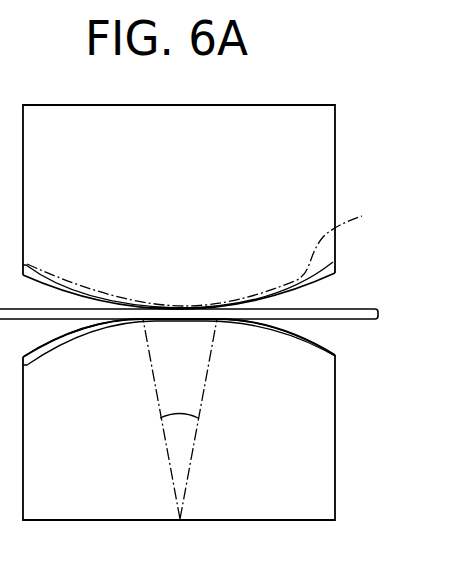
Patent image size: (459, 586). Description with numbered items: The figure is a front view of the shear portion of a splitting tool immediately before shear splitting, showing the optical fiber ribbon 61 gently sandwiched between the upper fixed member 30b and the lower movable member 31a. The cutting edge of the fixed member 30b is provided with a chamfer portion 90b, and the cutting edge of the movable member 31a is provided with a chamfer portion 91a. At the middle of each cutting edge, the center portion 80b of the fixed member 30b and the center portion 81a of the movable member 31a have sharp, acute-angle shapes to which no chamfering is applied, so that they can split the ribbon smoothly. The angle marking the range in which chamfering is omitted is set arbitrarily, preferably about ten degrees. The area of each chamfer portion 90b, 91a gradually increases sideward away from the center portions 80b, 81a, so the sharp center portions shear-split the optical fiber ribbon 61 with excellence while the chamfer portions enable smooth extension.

The fixed member 30b is at (303, 126).
The chamfer portion 90b is at (218, 255).
The center portion of cutting edge 80b is at (180, 307).
The optical fiber ribbon 61 is at (363, 308).
The movable member 31a is at (317, 447).
The chamfer portion 91a is at (325, 346).
The center portion of cutting edge 81a is at (181, 320).